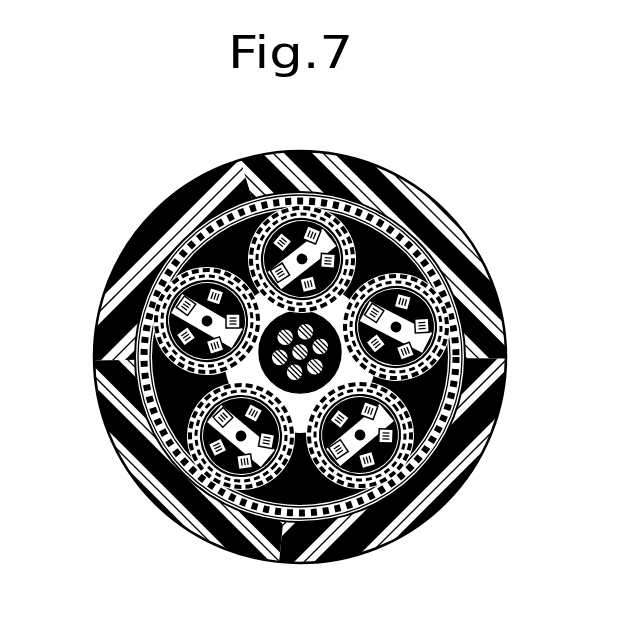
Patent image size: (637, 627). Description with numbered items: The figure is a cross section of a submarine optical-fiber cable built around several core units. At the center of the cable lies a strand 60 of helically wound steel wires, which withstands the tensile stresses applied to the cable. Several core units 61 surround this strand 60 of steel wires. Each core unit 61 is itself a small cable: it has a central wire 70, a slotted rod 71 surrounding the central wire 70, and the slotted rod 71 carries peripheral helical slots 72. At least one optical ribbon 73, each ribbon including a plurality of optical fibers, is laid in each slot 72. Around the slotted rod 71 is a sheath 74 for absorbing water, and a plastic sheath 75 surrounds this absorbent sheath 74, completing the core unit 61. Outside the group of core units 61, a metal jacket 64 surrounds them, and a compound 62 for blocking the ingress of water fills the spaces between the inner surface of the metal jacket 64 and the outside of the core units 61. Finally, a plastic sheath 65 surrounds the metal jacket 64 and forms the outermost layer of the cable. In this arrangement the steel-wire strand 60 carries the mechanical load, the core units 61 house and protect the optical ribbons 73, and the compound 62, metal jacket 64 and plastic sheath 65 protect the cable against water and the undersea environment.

The strand of helically wound steel wires 60 is at (408, 232).
The core unit 61 is at (445, 369).
The compound for blocking ingress of water 62 is at (490, 431).
The metal jacket 64 is at (467, 470).
The plastic sheath 65 is at (440, 500).
The central wire 70 is at (278, 531).
The slotted rod 71 is at (185, 524).
The peripheral helical slot 72 is at (352, 562).
The optical ribbon 73 is at (197, 451).
The sheath for absorbing water 74 is at (106, 364).
The plastic sheath 75 is at (160, 332).